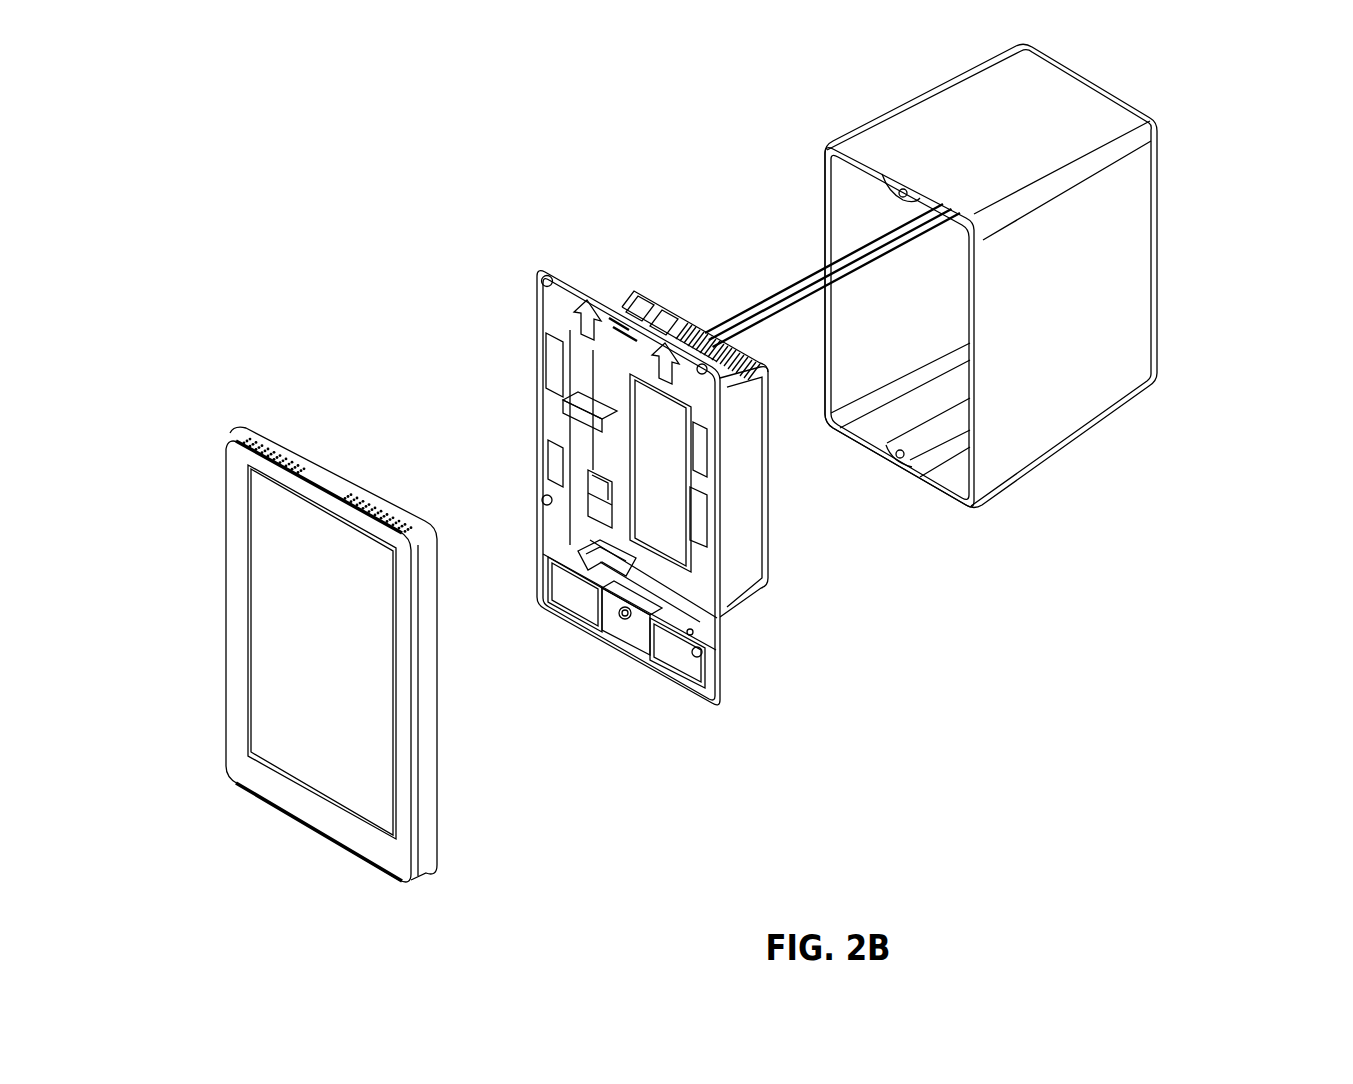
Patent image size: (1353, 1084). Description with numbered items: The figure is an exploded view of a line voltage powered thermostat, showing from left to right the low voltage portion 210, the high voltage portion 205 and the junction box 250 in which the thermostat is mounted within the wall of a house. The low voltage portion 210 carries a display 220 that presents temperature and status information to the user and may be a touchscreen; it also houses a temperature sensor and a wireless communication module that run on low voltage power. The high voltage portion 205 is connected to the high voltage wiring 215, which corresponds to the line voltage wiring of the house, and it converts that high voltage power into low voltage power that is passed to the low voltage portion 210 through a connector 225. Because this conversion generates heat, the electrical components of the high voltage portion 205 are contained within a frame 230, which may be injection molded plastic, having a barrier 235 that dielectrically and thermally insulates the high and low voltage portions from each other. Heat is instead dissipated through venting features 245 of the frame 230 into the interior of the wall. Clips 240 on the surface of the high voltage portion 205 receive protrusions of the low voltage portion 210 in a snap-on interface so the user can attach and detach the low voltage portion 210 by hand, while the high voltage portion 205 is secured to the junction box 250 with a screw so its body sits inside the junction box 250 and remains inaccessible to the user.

The high voltage portion 205 is at (697, 418).
The low voltage portion 210 is at (270, 673).
The high voltage wiring 215 is at (784, 297).
The display 220 is at (262, 652).
The connector 225 is at (597, 487).
The frame 230 is at (673, 665).
The barrier 235 is at (655, 560).
The clip 240 is at (597, 547).
The venting feature 245 is at (663, 307).
The junction box 250 is at (1063, 457).